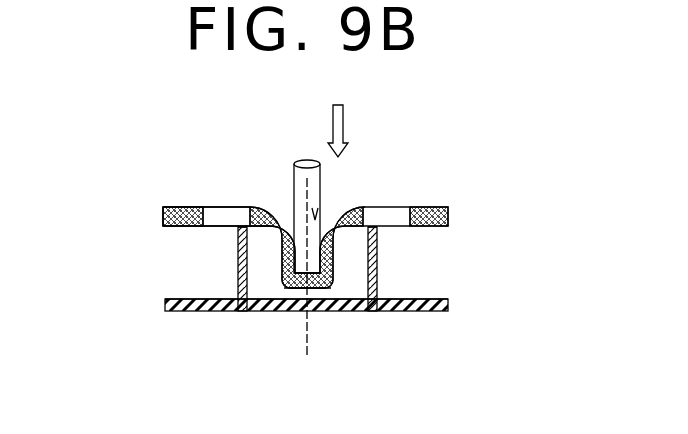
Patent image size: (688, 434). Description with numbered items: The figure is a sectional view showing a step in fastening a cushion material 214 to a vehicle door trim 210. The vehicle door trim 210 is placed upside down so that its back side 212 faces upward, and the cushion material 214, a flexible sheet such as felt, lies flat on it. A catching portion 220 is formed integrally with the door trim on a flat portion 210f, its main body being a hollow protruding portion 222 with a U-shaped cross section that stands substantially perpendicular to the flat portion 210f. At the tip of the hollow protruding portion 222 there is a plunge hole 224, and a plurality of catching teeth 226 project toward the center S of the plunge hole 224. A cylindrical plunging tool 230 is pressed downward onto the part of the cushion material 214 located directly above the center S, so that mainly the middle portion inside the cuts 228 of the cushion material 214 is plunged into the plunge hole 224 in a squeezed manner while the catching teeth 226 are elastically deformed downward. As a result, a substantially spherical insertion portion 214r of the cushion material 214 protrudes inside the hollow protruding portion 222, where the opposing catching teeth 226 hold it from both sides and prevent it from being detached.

The vehicle door trim 210 is at (281, 315).
The flat portion 210f is at (190, 302).
The back side 212 is at (440, 299).
The cushion material 214 is at (164, 188).
The insertion portion 214r is at (328, 290).
The catching portion 220 is at (412, 256).
The hollow protruding portion 222 is at (238, 268).
The plunge hole 224 is at (321, 205).
The catching teeth 226 is at (260, 232).
The cuts 228 is at (205, 210).
The plunging tool 230 is at (296, 178).
The center of the plunge hole S is at (309, 284).